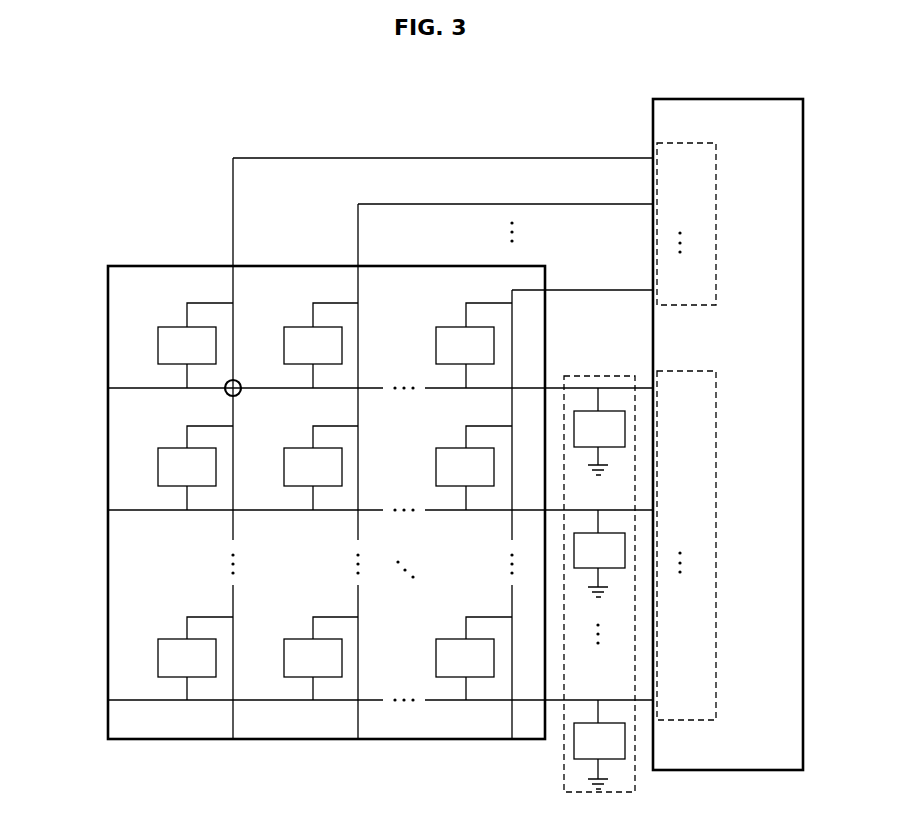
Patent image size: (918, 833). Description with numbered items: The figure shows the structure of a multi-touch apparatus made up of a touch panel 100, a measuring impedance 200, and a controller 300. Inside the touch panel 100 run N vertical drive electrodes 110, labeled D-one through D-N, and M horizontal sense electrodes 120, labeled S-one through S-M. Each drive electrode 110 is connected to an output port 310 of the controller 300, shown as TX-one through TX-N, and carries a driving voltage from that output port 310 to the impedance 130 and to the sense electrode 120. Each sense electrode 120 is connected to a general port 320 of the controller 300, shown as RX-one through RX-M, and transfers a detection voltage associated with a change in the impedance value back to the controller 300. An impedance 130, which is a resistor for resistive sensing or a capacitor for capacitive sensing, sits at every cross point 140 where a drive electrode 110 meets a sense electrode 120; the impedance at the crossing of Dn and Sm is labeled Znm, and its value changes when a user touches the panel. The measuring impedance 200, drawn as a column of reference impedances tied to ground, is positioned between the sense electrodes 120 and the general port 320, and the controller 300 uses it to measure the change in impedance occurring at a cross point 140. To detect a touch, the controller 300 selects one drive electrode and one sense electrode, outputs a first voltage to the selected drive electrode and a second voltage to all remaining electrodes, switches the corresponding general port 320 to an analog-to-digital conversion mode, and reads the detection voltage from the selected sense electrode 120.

The touch panel 100 is at (537, 265).
The drive electrode 110 is at (233, 218).
The sense electrode 120 is at (134, 387).
The impedance 130 is at (187, 303).
The cross point 140 is at (238, 380).
The measuring impedance 200 is at (586, 376).
The controller 300 is at (730, 98).
The output port 310 is at (688, 143).
The general port 320 is at (690, 370).